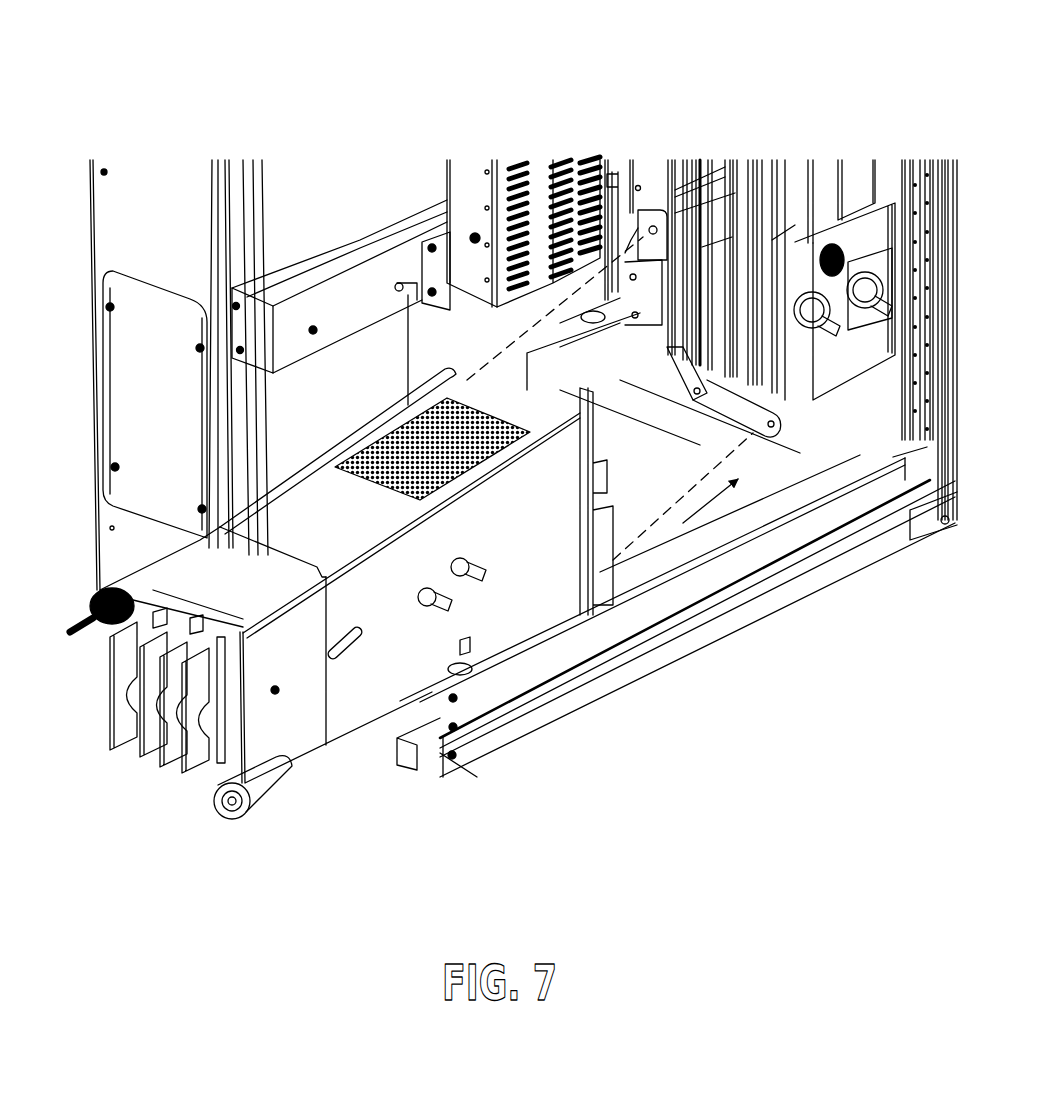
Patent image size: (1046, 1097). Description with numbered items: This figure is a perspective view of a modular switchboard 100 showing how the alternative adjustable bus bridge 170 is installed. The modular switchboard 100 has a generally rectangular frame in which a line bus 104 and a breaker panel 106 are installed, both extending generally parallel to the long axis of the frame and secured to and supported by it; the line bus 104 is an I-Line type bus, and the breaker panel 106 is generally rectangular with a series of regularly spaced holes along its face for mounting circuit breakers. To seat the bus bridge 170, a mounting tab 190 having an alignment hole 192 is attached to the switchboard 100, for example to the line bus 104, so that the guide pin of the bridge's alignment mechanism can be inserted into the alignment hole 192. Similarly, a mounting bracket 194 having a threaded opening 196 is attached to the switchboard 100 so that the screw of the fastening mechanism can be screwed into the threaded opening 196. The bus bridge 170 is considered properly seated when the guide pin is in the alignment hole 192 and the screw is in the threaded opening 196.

The modular switchboard 100 is at (108, 94).
The line bus 104 is at (824, 157).
The breaker panel 106 is at (496, 132).
The alternative adjustable bus bridge 170 is at (325, 759).
The mounting tab 190 is at (652, 222).
The alignment hole 192 is at (612, 172).
The mounting bracket 194 is at (862, 412).
The threaded opening 196 is at (756, 402).